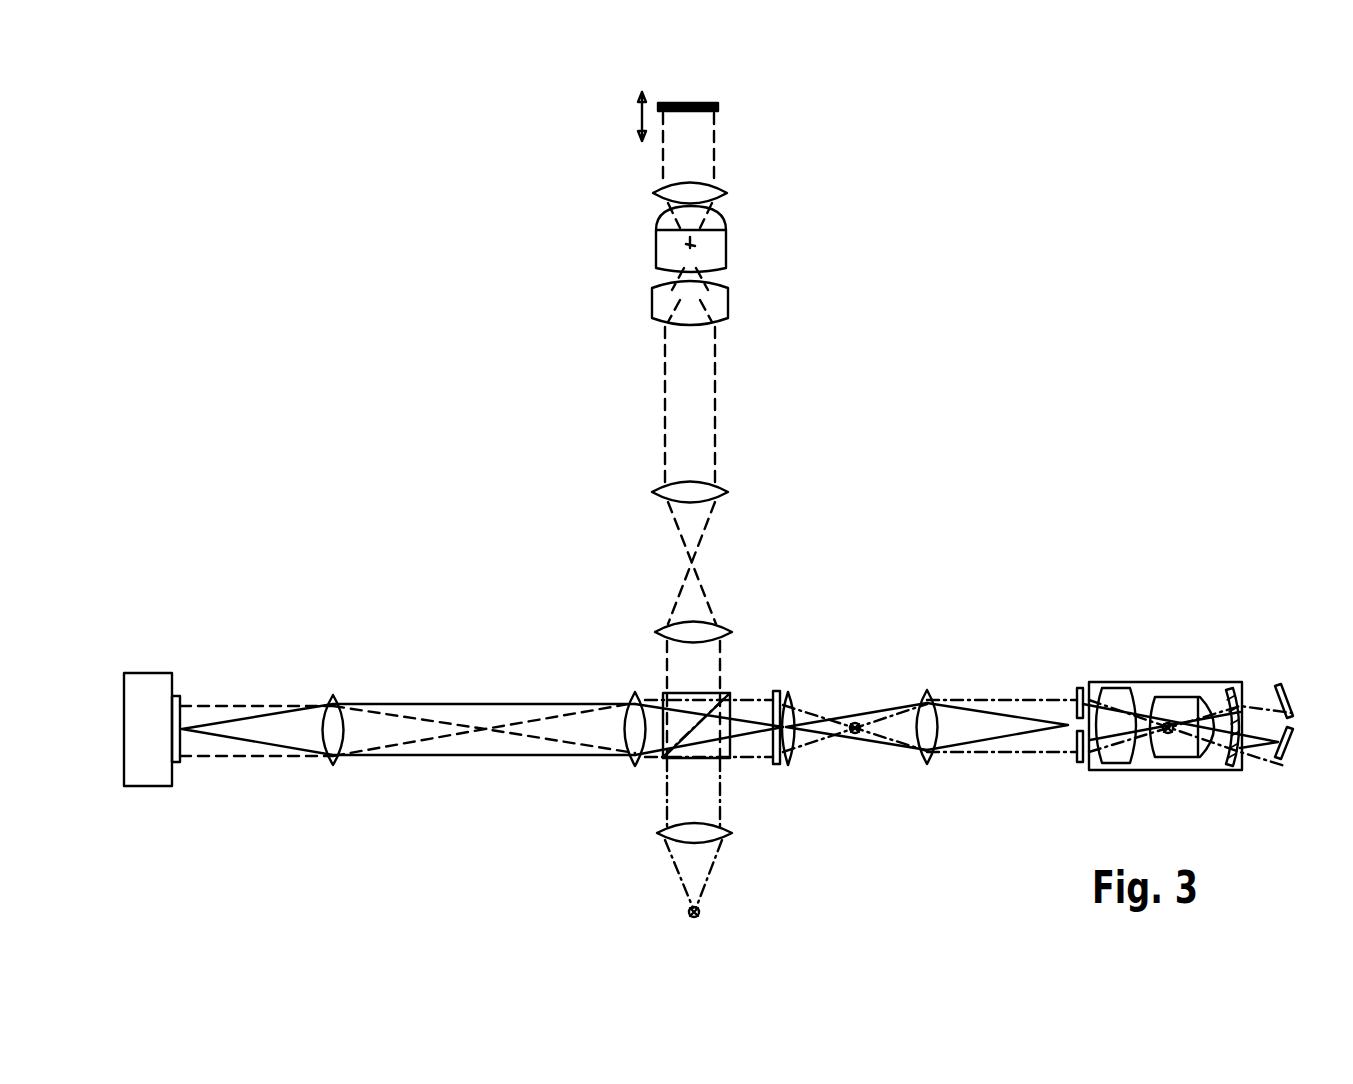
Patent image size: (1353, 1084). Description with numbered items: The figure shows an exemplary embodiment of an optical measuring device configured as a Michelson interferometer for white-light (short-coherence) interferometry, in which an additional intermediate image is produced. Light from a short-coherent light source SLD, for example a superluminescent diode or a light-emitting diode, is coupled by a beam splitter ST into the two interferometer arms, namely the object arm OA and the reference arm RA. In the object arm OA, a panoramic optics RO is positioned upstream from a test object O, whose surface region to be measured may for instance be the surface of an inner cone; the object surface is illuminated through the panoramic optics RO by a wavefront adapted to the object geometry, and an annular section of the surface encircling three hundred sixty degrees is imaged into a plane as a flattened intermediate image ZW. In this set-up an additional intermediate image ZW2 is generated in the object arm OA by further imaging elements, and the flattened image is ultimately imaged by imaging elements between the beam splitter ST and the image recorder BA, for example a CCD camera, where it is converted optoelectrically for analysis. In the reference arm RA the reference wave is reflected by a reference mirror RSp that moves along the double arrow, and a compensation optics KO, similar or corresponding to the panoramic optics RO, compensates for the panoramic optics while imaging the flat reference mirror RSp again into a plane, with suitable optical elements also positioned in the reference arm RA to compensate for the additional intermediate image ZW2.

The reference mirror RSp is at (722, 106).
The compensation optics KO is at (648, 246).
The reference arm RA is at (760, 308).
The image recorder BA is at (182, 690).
The beam splitter ST is at (660, 762).
The additional intermediate image ZW2 is at (768, 688).
The object arm OA is at (935, 650).
The flattened intermediate image ZW is at (1075, 690).
The panoramic optics RO is at (1170, 680).
The test object O is at (1277, 683).
The short-coherent light source SLD is at (700, 910).